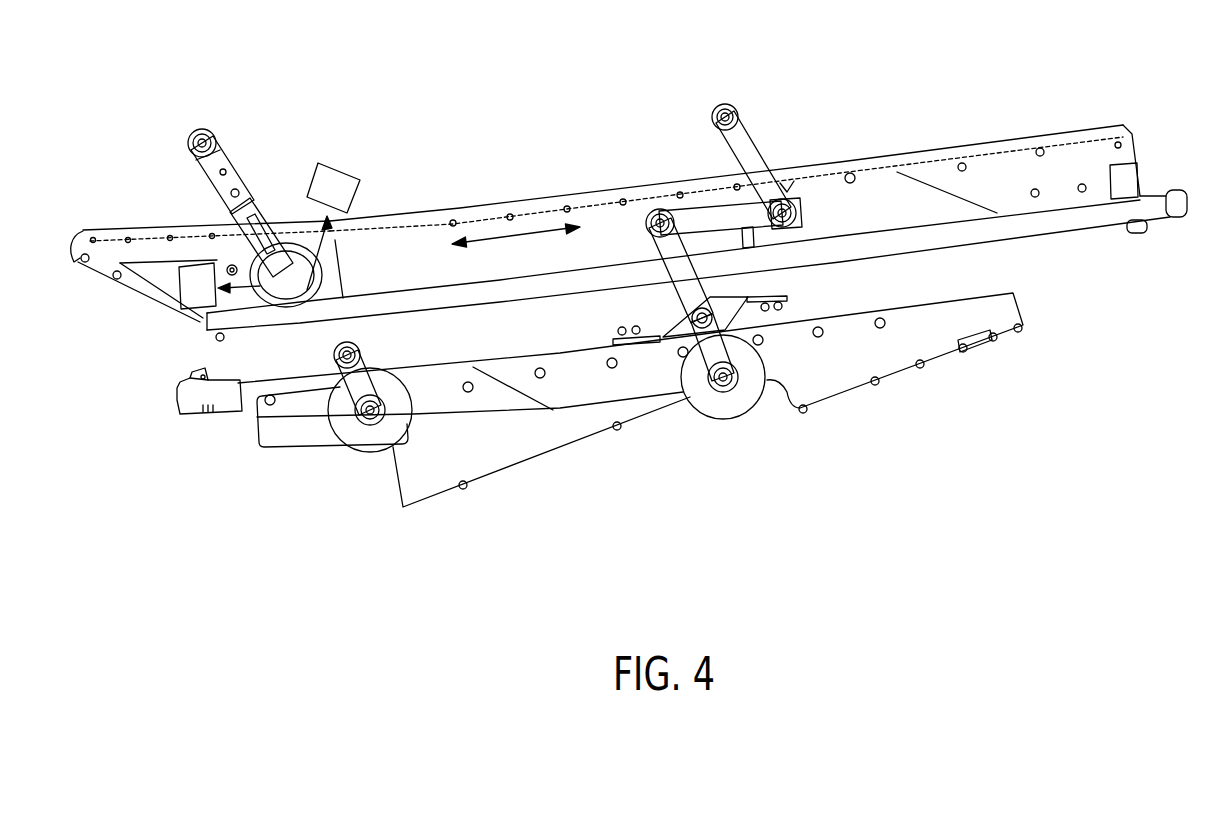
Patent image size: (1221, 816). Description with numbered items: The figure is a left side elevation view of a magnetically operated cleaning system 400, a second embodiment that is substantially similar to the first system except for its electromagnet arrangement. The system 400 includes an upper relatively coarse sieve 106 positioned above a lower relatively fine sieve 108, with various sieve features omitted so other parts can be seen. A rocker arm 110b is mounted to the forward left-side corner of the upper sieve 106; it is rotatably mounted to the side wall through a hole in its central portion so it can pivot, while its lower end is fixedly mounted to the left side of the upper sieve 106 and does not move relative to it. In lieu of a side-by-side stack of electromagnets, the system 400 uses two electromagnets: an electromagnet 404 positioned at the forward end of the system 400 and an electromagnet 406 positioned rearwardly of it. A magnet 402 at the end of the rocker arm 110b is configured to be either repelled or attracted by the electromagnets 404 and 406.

The magnetically operated cleaning system 400 is at (1092, 102).
The upper relatively coarse sieve 106 is at (1133, 152).
The lower relatively fine sieve 108 is at (1018, 303).
The rocker arm 110b is at (235, 167).
The magnet 402 is at (293, 300).
The electromagnet 404 is at (180, 288).
The electromagnet 406 is at (342, 166).